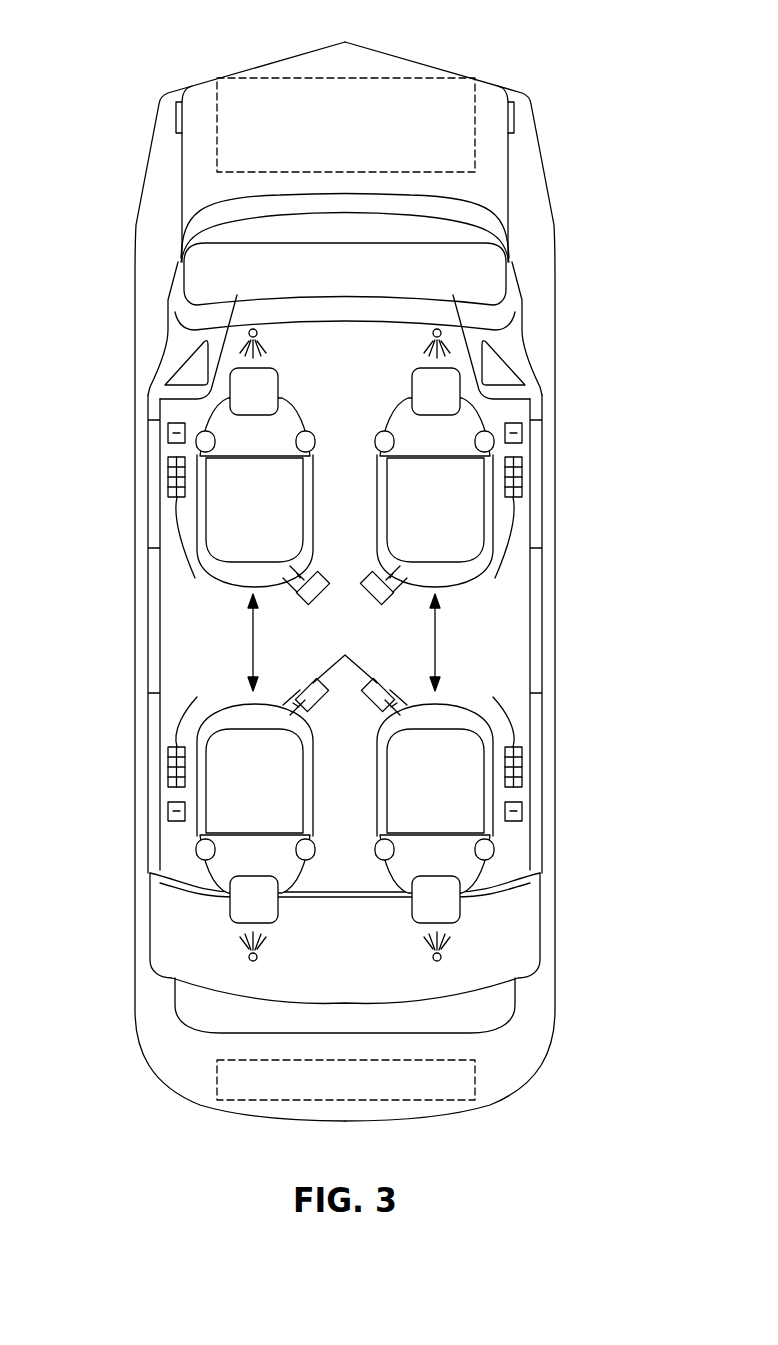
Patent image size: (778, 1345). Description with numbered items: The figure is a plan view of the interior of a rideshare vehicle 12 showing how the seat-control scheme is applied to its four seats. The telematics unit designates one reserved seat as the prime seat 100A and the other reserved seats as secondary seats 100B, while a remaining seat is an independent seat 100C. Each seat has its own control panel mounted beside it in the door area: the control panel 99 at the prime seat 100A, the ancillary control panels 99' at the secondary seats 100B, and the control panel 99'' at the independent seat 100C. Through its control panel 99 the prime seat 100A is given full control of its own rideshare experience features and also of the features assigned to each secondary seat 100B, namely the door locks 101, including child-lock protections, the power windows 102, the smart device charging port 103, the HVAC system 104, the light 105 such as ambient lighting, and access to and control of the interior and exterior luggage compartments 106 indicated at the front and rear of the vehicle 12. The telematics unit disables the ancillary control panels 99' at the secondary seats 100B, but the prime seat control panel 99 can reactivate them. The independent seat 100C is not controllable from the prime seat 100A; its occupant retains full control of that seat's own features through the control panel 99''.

The vehicle 12 is at (552, 180).
The control panel 99 is at (140, 473).
The ancillary control panel 99' is at (350, 618).
The control panel 99'' is at (556, 762).
The prime seat 100A is at (275, 527).
The secondary seat 100B is at (457, 527).
The independent seat 100C is at (457, 779).
The door lock 101 is at (345, 622).
The power window 102 is at (152, 523).
The smart device charging port 103 is at (166, 433).
The HVAC system 104 is at (318, 602).
The light 105 is at (258, 336).
The luggage compartment 106 is at (413, 78).